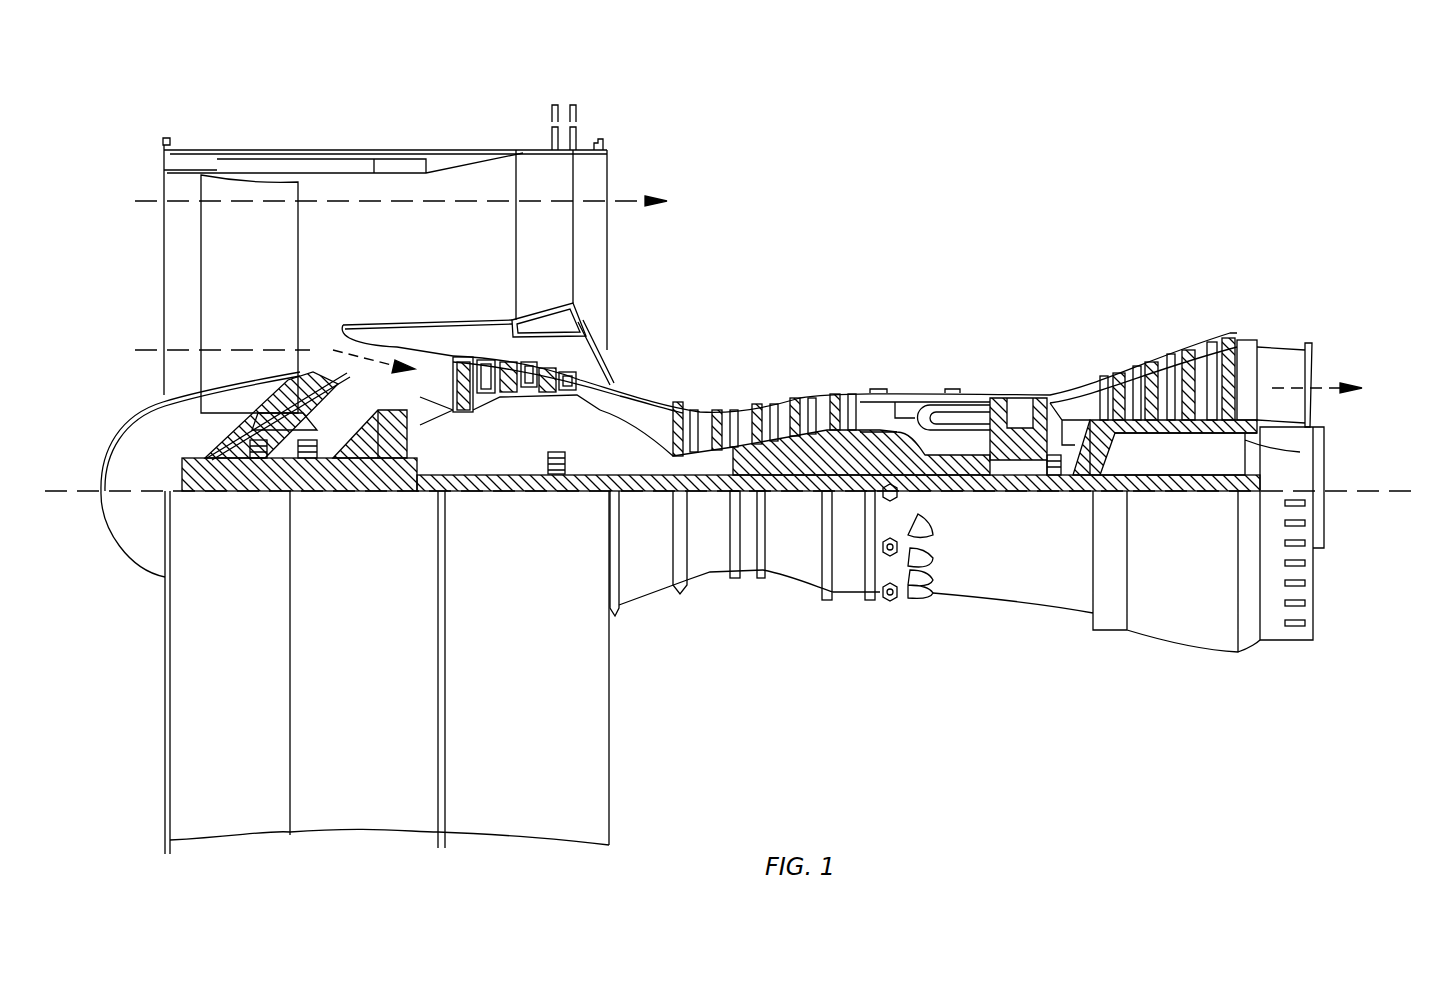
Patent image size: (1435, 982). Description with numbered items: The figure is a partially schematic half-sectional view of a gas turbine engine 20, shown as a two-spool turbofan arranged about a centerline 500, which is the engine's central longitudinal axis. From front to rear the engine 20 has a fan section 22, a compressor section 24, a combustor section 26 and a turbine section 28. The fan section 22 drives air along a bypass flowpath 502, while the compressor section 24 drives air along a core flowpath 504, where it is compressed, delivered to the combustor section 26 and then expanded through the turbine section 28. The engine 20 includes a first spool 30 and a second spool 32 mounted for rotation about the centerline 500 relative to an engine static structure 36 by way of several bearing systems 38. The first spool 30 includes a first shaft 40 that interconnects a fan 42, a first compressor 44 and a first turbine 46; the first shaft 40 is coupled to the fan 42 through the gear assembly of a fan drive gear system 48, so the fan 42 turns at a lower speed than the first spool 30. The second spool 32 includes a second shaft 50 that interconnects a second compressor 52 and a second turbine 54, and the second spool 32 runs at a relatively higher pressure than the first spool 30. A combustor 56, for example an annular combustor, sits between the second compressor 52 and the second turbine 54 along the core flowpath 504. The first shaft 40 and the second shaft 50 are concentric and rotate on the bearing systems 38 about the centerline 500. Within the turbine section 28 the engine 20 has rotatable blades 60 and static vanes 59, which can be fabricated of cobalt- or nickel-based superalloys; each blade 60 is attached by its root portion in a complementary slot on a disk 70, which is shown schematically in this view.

The gas turbine engine 20 is at (873, 216).
The fan section 22 is at (300, 142).
The compressor section 24 is at (660, 384).
The combustor section 26 is at (915, 368).
The turbine section 28 is at (1148, 298).
The first spool 30 is at (808, 494).
The second spool 32 is at (840, 445).
The engine static structure 36 is at (848, 596).
The bearing systems 38 is at (549, 491).
The first shaft 40 is at (640, 491).
The fan 42 is at (236, 298).
The first compressor 44 is at (532, 368).
The first turbine 46 is at (1172, 358).
The fan drive gear system 48 is at (377, 491).
The second shaft 50 is at (963, 491).
The second compressor 52 is at (735, 425).
The second turbine 54 is at (1020, 396).
The combustor 56 is at (942, 412).
The static vanes 59 is at (1132, 367).
The rotatable blades 60 is at (1128, 378).
The disk 70 is at (1210, 440).
The centerline 500 is at (1410, 488).
The bypass flowpath 502 is at (633, 193).
The core flowpath 504 is at (314, 350).